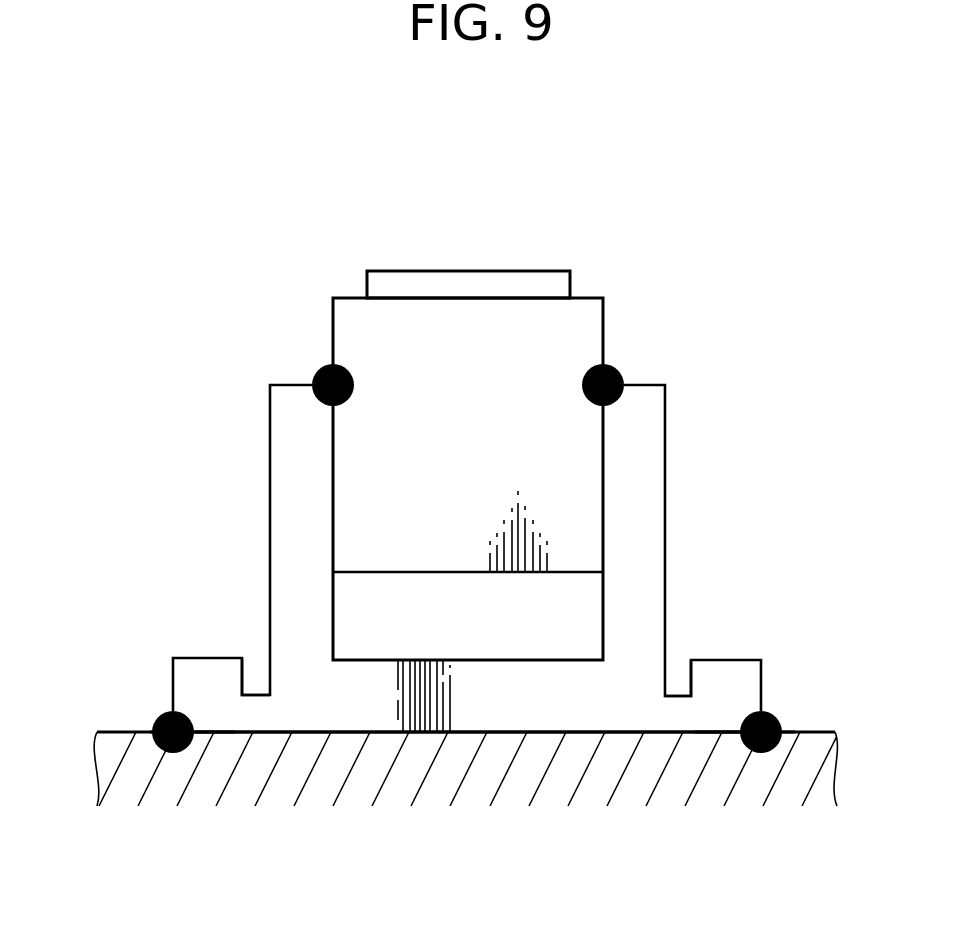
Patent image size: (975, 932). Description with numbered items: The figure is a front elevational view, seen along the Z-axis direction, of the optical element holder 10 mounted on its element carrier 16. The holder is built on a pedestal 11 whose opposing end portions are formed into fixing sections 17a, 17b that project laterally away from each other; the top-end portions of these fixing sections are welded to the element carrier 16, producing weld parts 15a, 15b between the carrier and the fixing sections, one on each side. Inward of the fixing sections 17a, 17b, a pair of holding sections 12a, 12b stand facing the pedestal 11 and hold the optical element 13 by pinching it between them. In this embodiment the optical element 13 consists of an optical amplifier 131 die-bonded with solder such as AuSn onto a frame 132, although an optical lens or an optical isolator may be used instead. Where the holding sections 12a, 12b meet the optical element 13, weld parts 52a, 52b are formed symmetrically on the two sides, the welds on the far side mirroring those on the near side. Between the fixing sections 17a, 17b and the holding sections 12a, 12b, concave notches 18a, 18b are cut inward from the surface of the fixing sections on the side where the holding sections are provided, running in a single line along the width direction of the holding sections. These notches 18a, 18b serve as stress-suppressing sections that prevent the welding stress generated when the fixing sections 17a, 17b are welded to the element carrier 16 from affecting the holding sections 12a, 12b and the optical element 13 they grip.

The semiconductor device 10 is at (745, 382).
The pedestal 11 is at (520, 705).
The holding section 12a is at (282, 395).
The holding section 12b is at (648, 393).
The optical element 13 is at (468, 422).
The optical amplifier 131 is at (390, 162).
The frame 132 is at (435, 320).
The weld part 15a is at (155, 717).
The weld part 15b is at (773, 712).
The element carrier 16 is at (812, 733).
The fixing section 17a is at (215, 705).
The fixing section 17b is at (713, 710).
The notch 18a is at (255, 690).
The notch 18b is at (680, 687).
The weld part 52a is at (322, 365).
The weld part 52b is at (612, 365).